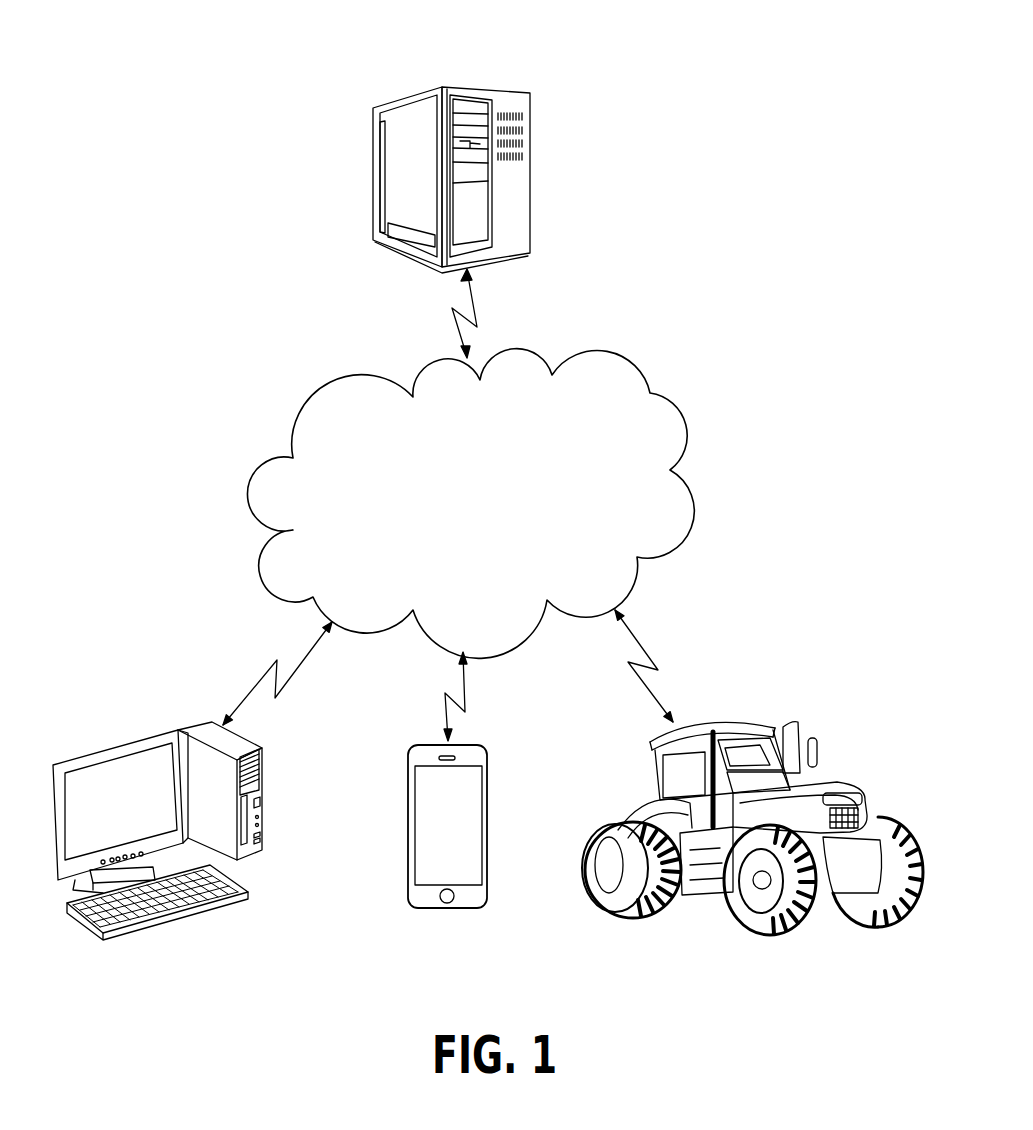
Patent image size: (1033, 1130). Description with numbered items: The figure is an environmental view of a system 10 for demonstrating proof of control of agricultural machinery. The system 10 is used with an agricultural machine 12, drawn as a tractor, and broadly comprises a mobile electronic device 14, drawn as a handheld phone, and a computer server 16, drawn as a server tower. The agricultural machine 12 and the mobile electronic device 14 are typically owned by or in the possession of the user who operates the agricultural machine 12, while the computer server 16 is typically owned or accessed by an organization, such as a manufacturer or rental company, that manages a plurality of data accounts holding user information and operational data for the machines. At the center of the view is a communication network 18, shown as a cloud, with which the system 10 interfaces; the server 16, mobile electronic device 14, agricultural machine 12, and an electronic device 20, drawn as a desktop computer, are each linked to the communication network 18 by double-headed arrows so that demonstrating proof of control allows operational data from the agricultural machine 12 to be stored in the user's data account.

The system 10 is at (595, 52).
The agricultural machine 12 is at (760, 722).
The mobile electronic device 14 is at (473, 742).
The computer server 16 is at (398, 98).
The communication network 18 is at (622, 352).
The electronic device 20 is at (188, 722).